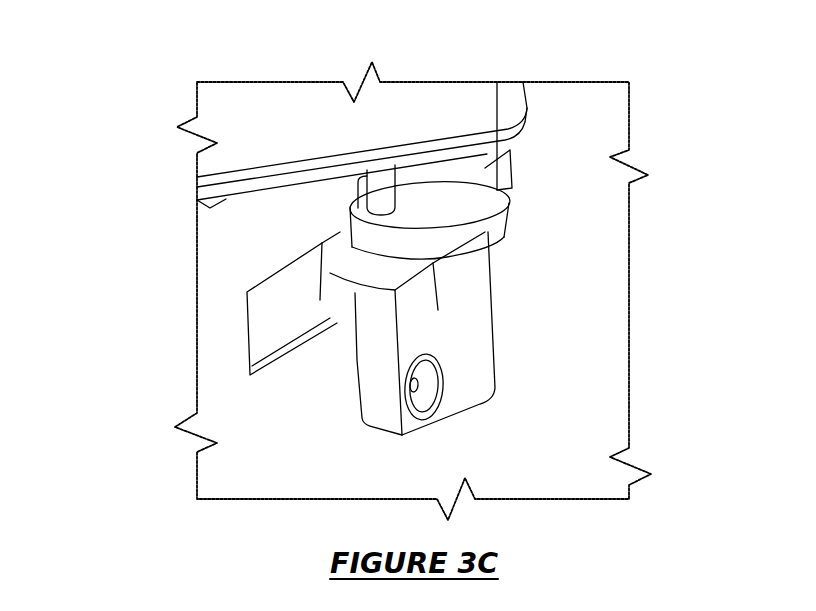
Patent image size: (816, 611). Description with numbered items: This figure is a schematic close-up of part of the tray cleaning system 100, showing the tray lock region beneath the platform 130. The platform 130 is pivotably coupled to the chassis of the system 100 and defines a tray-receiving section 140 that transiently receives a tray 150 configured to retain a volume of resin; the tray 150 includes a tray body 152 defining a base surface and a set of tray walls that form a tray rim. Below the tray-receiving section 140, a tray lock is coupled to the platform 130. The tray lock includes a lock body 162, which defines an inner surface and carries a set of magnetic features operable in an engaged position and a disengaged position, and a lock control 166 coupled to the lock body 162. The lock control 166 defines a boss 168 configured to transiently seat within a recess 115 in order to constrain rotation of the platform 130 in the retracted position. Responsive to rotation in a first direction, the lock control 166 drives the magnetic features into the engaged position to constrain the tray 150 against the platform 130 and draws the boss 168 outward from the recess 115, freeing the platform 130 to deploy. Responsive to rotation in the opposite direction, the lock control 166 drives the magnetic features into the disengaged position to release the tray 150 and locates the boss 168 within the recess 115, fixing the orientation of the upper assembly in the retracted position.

The tray cleaning system 100 is at (645, 118).
The recess 115 is at (270, 344).
The platform 130 is at (301, 120).
The tray-receiving section 140 is at (301, 120).
The tray 150 is at (301, 118).
The tray body 152 is at (328, 160).
The lock body 162 is at (432, 192).
The lock control 166 is at (415, 386).
The boss 168 is at (329, 297).